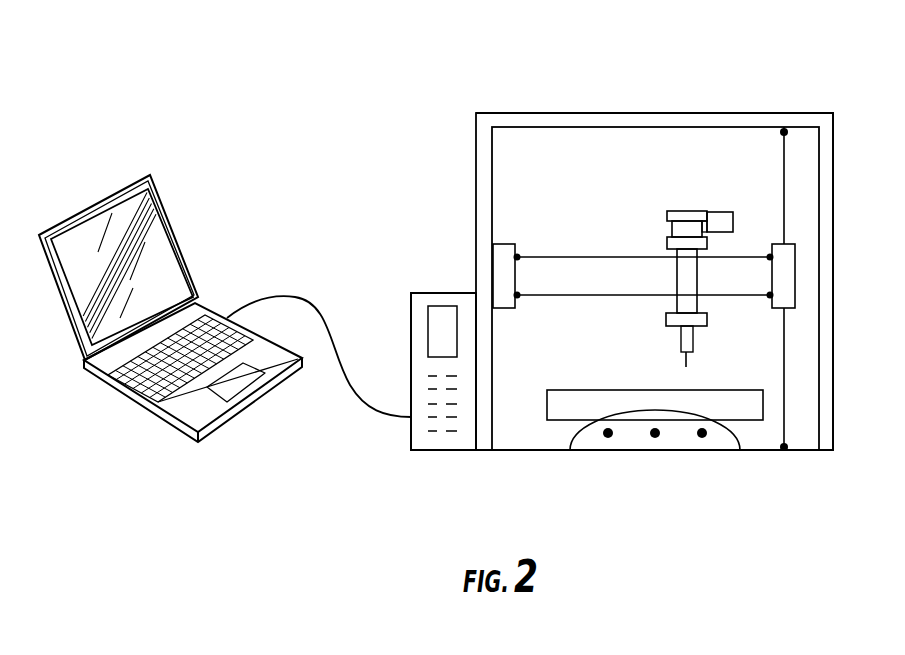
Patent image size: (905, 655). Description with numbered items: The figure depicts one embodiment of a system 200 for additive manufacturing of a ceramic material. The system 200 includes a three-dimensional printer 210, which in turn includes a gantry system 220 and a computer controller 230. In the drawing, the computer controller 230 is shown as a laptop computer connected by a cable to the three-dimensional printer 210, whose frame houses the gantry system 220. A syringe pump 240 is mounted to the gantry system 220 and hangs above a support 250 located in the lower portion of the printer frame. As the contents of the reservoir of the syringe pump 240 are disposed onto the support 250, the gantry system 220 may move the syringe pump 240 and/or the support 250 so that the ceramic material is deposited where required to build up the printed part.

The system 200 is at (134, 72).
The 3D printer 210 is at (423, 293).
The gantry system 220 is at (580, 257).
The computer controller 230 is at (177, 217).
The syringe pump 240 is at (672, 210).
The support 250 is at (562, 410).